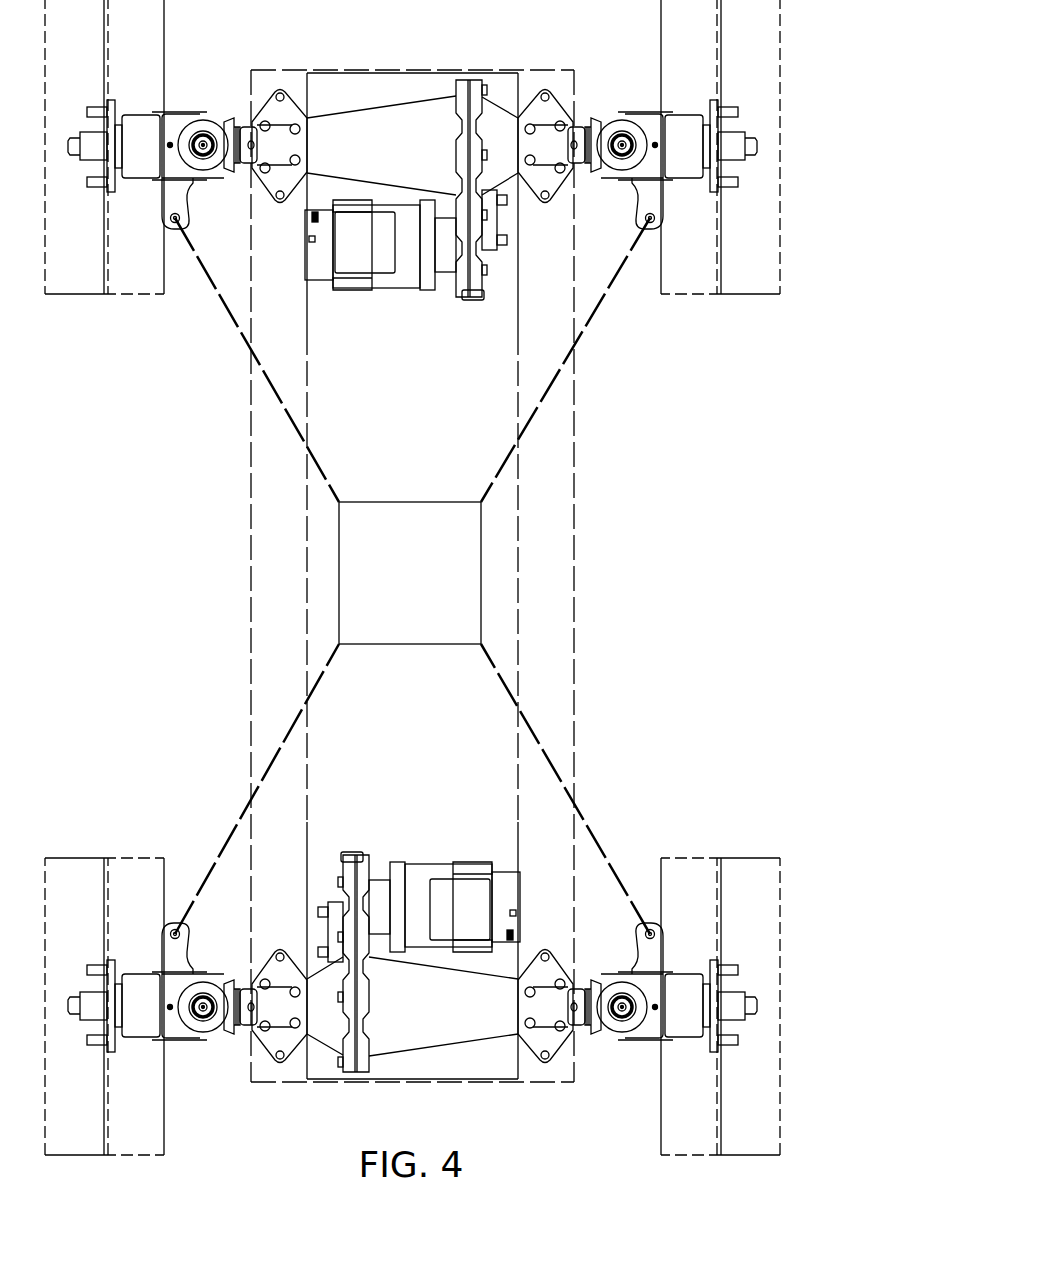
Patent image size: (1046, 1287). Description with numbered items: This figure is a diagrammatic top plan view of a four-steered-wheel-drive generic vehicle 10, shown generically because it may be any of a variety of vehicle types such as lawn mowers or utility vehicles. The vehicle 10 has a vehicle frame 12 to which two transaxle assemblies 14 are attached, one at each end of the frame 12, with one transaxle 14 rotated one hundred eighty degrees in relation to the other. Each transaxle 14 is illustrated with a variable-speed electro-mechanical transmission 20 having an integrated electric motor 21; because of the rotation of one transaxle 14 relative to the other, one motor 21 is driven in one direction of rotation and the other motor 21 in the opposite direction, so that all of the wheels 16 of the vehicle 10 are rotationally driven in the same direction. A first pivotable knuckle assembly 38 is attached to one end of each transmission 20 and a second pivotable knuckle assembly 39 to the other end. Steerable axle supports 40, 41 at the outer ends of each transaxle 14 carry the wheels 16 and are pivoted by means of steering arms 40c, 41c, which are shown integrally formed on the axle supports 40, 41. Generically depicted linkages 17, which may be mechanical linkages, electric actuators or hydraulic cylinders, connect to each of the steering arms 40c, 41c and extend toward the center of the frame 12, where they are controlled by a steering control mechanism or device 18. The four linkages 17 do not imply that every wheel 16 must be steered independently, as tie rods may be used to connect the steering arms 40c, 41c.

The generic vehicle 10 is at (820, 52).
The vehicle frame 12 is at (574, 575).
The transaxle assembly 14 is at (412, 576).
The wheel 16 is at (105, 295).
The linkage 17 is at (222, 300).
The steering control mechanism 18 is at (399, 583).
The transmission 20 is at (401, 156).
The electric motor 21 is at (352, 250).
The first pivotable knuckle assembly 38 is at (605, 82).
The second pivotable knuckle assembly 39 is at (221, 82).
The steerable axle support 40 is at (676, 156).
The steering arm 40c is at (637, 200).
The steerable axle support 41 is at (128, 156).
The steering arm 41c is at (190, 200).